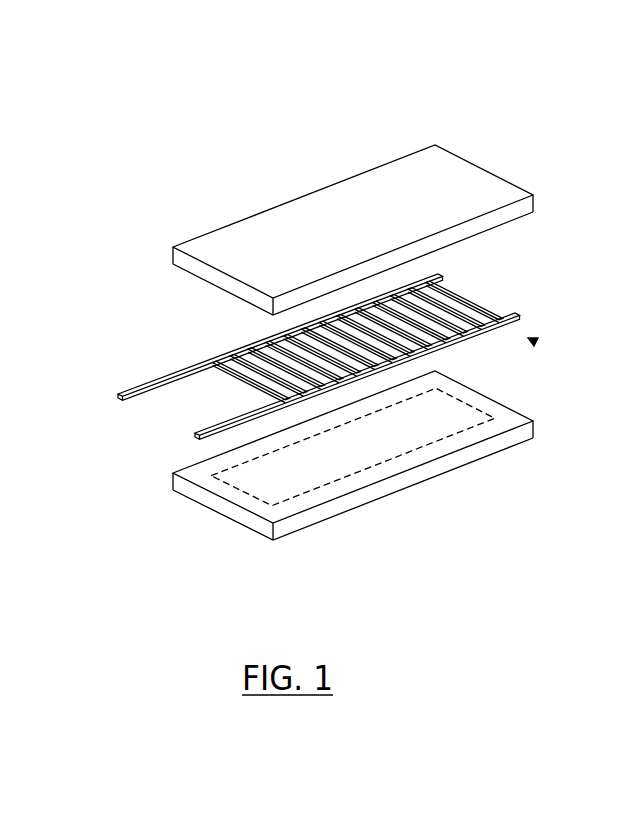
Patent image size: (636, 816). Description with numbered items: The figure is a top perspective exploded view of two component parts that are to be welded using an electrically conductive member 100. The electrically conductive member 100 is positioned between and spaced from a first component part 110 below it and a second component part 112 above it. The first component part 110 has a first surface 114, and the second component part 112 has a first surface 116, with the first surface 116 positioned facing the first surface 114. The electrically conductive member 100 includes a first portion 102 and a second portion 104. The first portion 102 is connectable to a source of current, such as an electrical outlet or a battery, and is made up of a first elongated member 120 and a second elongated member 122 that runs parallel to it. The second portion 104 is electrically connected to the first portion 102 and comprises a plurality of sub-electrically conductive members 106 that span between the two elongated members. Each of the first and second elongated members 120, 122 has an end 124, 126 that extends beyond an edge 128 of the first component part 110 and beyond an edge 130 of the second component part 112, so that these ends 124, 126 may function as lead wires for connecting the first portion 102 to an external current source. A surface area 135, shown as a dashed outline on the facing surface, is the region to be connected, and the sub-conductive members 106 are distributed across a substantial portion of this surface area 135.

The electrically conductive member 100 is at (531, 339).
The first portion 102 is at (488, 330).
The second portion 104 is at (452, 292).
The sub-electrically conductive members 106 is at (230, 362).
The first component part 110 is at (398, 482).
The second component part 112 is at (458, 175).
The first surface 114 is at (565, 437).
The first surface 116 is at (520, 216).
The first elongated member 120 is at (192, 375).
The second elongated member 122 is at (252, 413).
The end 124 is at (118, 397).
The end 126 is at (196, 438).
The edge 128 is at (203, 500).
The edge 130 is at (190, 265).
The surface area 135 is at (345, 482).